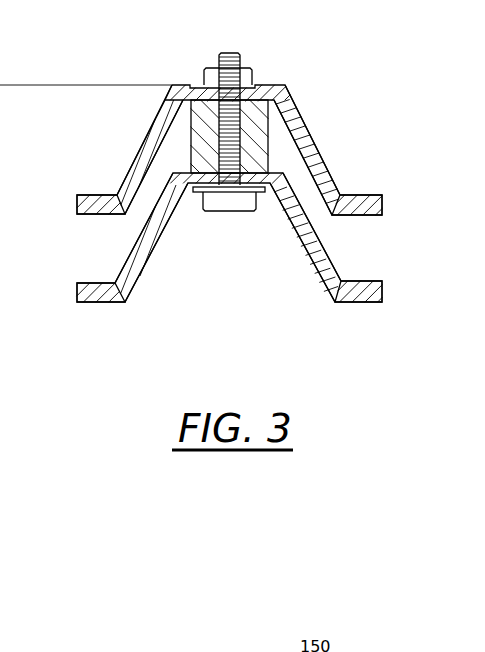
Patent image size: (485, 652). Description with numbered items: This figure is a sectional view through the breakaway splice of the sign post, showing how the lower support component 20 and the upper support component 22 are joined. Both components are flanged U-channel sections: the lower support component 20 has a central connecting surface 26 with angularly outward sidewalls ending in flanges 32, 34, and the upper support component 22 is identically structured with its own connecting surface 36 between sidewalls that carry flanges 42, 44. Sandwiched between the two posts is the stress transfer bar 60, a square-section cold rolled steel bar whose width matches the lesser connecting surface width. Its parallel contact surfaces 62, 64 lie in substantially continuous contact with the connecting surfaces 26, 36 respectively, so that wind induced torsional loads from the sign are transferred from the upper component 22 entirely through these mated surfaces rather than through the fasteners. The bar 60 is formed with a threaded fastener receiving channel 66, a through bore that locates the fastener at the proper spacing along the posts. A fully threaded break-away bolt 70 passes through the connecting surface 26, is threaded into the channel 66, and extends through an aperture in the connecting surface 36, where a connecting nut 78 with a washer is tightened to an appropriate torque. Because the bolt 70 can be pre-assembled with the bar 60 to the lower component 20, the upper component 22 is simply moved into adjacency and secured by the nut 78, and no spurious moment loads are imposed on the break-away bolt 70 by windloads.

The lower support component 20 is at (298, 287).
The upper support component 22 is at (336, 136).
The connecting surface 26 is at (264, 177).
The flange 32 is at (341, 304).
The flange 34 is at (100, 304).
The connecting surface 36 is at (205, 105).
The flange 42 is at (357, 216).
The flange 44 is at (94, 216).
The stress transfer bar 60 is at (188, 124).
The contact surface 62 is at (192, 190).
The contact surface 64 is at (254, 98).
The fastener receiving channel 66 is at (240, 118).
The break-away bolt 70 is at (214, 212).
The connecting nut 78 is at (213, 67).